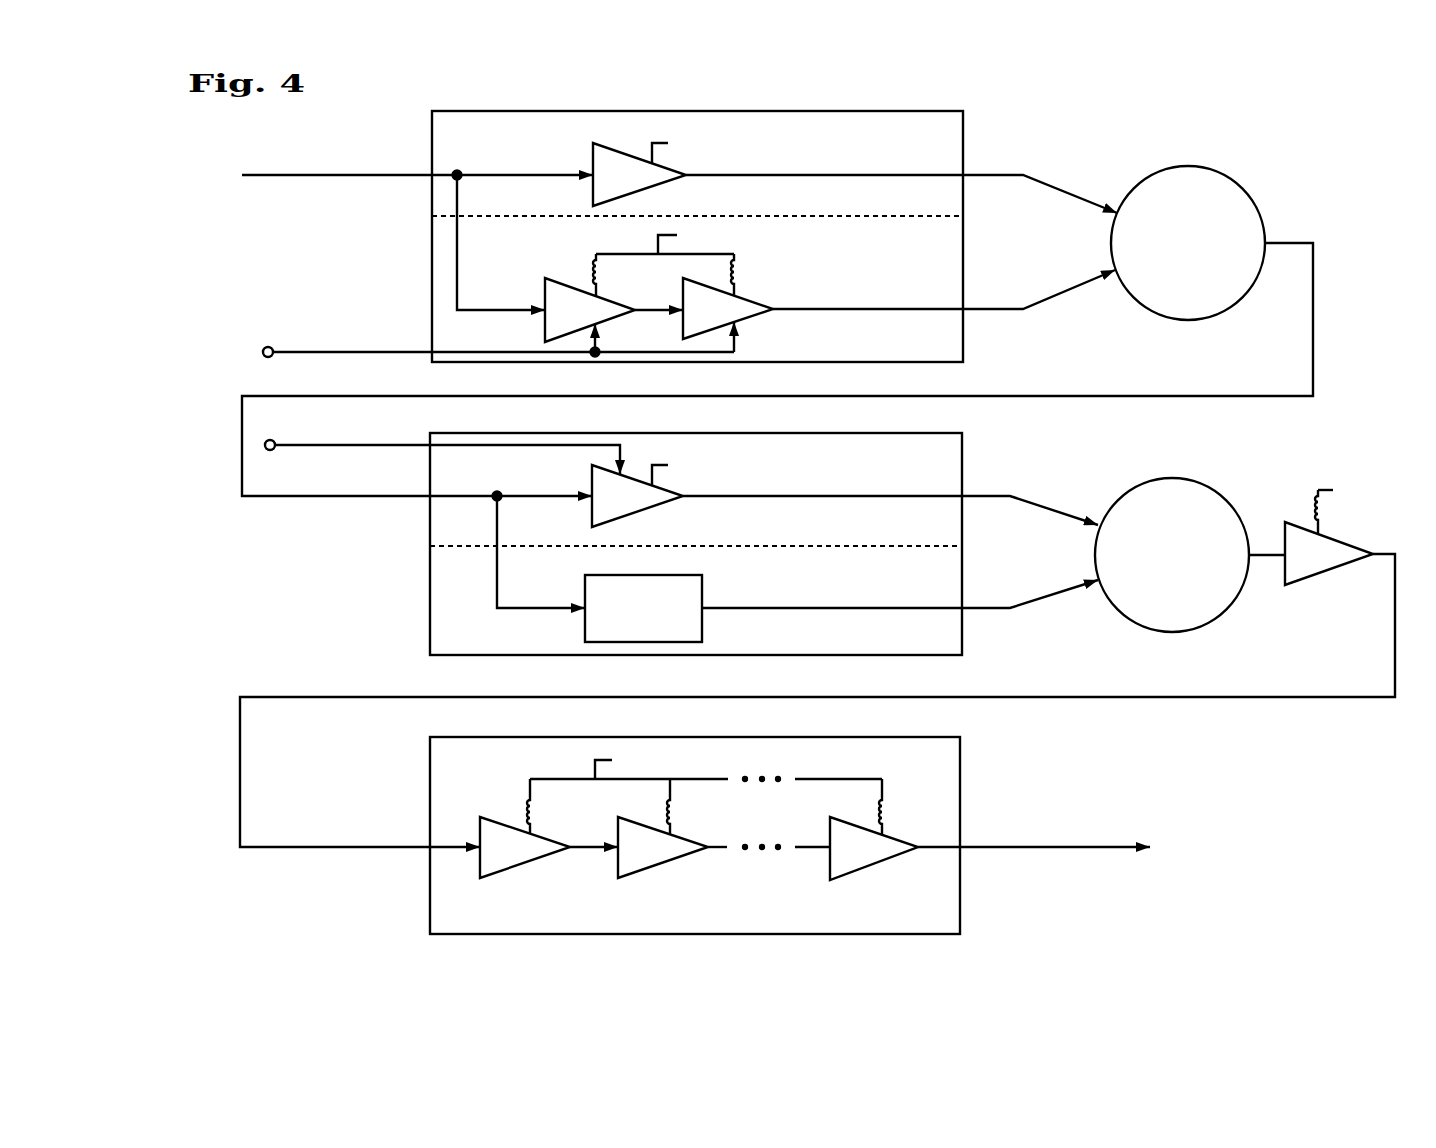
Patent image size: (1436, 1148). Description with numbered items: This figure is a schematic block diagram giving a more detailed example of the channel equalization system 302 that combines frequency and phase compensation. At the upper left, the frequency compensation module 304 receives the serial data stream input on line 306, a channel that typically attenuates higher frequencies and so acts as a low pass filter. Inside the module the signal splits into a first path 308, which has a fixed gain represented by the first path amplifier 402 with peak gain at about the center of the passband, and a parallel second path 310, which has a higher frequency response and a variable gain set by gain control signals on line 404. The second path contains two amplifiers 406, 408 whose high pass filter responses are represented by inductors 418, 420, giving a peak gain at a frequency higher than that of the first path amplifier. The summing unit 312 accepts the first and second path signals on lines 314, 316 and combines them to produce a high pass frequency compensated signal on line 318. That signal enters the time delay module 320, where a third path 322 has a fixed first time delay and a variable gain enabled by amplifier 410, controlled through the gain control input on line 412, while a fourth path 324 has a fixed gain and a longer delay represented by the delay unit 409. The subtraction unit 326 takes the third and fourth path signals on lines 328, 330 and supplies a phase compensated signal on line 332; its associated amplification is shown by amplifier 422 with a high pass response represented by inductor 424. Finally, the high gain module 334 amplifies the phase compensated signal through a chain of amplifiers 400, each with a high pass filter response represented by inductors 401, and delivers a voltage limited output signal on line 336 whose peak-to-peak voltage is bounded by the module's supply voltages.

The system 302 is at (1353, 114).
The frequency compensation module 304 is at (910, 353).
The input line 306 is at (281, 174).
The first path 308 is at (910, 166).
The second path 310 is at (910, 270).
The summing unit 312 is at (1167, 282).
The summing unit input line 314 is at (997, 174).
The summing unit input line 316 is at (992, 308).
The summing unit output line 318 is at (1311, 360).
The time delay module 320 is at (910, 646).
The third path 322 is at (910, 489).
The fourth path 324 is at (910, 604).
The subtraction unit 326 is at (1151, 607).
The subtraction unit input line 328 is at (990, 495).
The subtraction unit input line 330 is at (990, 607).
The subtraction unit output line 332 is at (298, 846).
The high gain module 334 is at (857, 927).
The output line 336 is at (1077, 846).
The amplifiers 400 is at (527, 860).
The inductors 401 is at (527, 812).
The first path amplifier 402 is at (642, 189).
The gain control line 404 is at (300, 351).
The second path amplifier 406 is at (593, 322).
The second path amplifier 408 is at (731, 322).
The delay unit 409 is at (622, 636).
The amplifier 410 is at (640, 509).
The gain control input line 412 is at (300, 444).
The inductor 418 is at (593, 268).
The inductor 420 is at (739, 284).
The amplifier 422 is at (1334, 567).
The inductor 424 is at (1314, 500).